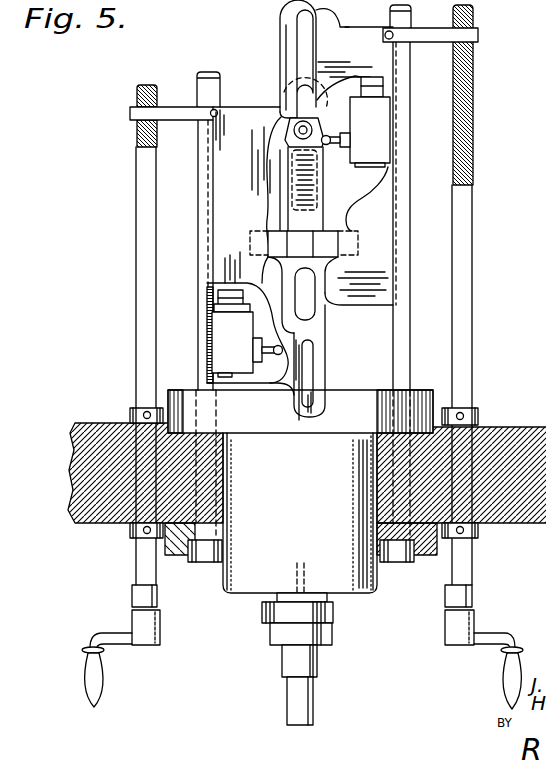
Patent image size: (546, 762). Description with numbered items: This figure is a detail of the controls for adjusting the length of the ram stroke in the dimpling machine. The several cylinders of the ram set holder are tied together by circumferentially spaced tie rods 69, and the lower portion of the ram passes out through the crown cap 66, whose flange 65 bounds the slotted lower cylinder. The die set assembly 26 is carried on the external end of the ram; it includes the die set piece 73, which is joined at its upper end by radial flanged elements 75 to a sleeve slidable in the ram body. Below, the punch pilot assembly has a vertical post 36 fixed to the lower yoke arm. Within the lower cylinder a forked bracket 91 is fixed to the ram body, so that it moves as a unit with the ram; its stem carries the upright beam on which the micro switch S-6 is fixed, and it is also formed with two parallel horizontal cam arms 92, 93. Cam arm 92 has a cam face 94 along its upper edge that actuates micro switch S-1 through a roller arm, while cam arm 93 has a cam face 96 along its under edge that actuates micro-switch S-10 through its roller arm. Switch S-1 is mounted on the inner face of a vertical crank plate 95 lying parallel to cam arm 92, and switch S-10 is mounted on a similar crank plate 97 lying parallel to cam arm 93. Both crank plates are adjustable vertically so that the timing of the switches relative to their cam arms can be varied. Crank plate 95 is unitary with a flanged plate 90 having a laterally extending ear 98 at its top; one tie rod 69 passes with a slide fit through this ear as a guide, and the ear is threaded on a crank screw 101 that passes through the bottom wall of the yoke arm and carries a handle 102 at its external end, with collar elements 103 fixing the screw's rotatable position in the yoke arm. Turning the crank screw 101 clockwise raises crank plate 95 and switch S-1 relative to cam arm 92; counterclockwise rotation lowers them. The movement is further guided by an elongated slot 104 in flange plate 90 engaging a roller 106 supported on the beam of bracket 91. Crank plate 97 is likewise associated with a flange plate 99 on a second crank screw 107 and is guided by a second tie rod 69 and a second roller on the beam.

The die set assembly 26 is at (349, 679).
The vertical support or post 36 is at (288, 593).
The flange 65 is at (348, 420).
The crown cap 66 is at (318, 550).
The tie rods 69 is at (214, 72).
The die set piece 73 is at (313, 708).
The radial flanged elements 75 is at (265, 611).
The flanged plate 90 is at (340, 12).
The forked bracket 91 is at (358, 248).
The cam arm 92 is at (346, 212).
The cam arm 93 is at (282, 193).
The cam face 94 is at (326, 148).
The crank plate 95 is at (393, 131).
The cam face 96 is at (268, 248).
The crank plate 97 is at (207, 298).
The ear 98 is at (440, 43).
The flange plate 99 is at (234, 103).
The crank screw 101 is at (474, 110).
The handle 102 is at (474, 623).
The collar elements 103 is at (480, 415).
The elongated slot 104 is at (306, 48).
The roller 106 is at (281, 117).
The second crank screw 107 is at (136, 93).
The micro switch S-1 is at (370, 126).
The micro switch S-6 is at (296, 168).
The micro-switch S-10 is at (234, 340).